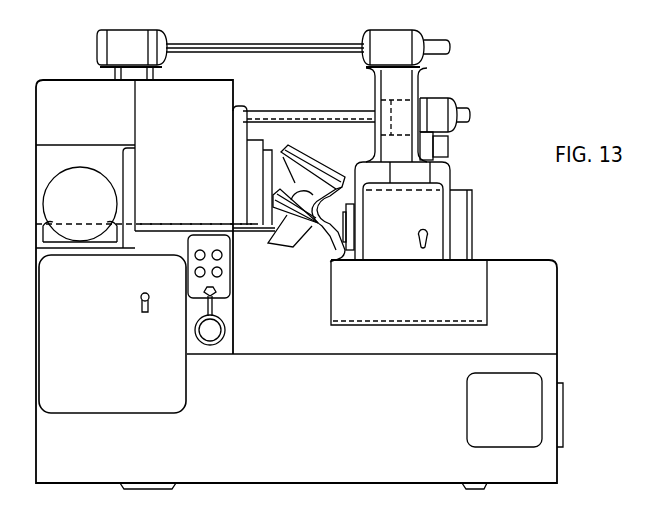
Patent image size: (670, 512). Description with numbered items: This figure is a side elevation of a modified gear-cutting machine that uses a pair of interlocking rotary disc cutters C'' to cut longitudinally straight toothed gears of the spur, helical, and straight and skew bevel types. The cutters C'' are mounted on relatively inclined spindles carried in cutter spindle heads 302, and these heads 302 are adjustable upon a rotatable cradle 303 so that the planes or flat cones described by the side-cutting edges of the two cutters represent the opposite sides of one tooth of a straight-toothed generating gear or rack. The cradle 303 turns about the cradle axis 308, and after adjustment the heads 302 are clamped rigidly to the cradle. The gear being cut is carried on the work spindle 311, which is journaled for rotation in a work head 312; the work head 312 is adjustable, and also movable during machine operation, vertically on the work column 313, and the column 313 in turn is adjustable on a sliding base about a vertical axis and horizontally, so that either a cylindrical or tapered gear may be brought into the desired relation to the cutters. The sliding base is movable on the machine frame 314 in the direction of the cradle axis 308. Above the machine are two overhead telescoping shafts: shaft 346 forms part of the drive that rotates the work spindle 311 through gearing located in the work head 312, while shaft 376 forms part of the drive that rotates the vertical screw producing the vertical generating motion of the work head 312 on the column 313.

The overhead telescoping shaft 376 is at (207, 46).
The rotatable cradle 303 is at (243, 110).
The cutter spindle head 302 is at (314, 178).
The overhead telescoping shaft 346 is at (466, 110).
The work head 312 is at (455, 192).
The work column 313 is at (422, 206).
The cradle axis 308 is at (196, 224).
The work spindle 311 is at (347, 226).
The machine frame 314 is at (299, 284).
The interlocking rotary disc cutters C'' is at (268, 236).